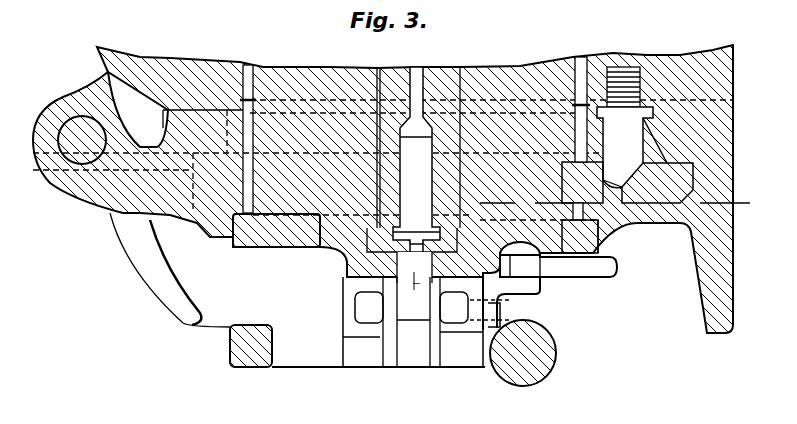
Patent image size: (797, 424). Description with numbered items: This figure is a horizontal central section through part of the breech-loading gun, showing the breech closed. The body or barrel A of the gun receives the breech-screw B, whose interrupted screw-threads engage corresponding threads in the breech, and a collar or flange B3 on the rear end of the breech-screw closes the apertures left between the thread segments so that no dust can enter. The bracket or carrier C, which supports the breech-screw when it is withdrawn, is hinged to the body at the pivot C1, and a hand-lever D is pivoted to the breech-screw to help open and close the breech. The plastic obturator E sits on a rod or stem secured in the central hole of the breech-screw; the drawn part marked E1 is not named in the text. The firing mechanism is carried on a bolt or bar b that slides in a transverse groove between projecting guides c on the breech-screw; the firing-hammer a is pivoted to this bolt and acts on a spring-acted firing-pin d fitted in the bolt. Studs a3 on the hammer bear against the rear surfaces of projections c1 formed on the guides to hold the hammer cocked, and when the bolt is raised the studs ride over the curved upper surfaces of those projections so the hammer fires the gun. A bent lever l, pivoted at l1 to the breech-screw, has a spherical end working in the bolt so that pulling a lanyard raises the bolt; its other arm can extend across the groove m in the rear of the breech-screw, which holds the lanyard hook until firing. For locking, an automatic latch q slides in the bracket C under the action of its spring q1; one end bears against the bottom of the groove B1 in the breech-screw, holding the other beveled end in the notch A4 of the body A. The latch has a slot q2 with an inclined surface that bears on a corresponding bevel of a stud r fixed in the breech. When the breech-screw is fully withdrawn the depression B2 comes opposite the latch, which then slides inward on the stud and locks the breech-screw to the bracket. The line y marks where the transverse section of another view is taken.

The body or barrel of the gun A is at (383, 189).
The notch in the body A4 is at (690, 175).
The breech-screw B is at (383, 142).
The groove in the breech-screw B1 is at (559, 116).
The depression or cavity B2 is at (580, 228).
The collar or flange B3 is at (276, 230).
The bolt or bar b is at (412, 249).
The bracket or carrier C is at (297, 272).
The hinge or pivot of the bracket C1 is at (82, 140).
The projecting guides c is at (538, 245).
The projections on the guides c1 is at (343, 328).
The hand-lever D is at (523, 353).
The plastic obturator E is at (416, 175).
The firing pin head E1 is at (418, 148).
The firing-hammer a is at (411, 322).
The studs or projections a3 is at (432, 307).
The firing-pin d is at (414, 277).
The stud r is at (625, 127).
The automatic latch q is at (657, 183).
The spring of the latch q1 is at (655, 144).
The slot in the latch q2 is at (582, 182).
The section line y y is at (620, 204).
The groove in the breech-screw m is at (520, 248).
The bent lever l is at (558, 266).
The pivot of the bent lever l1 is at (511, 303).